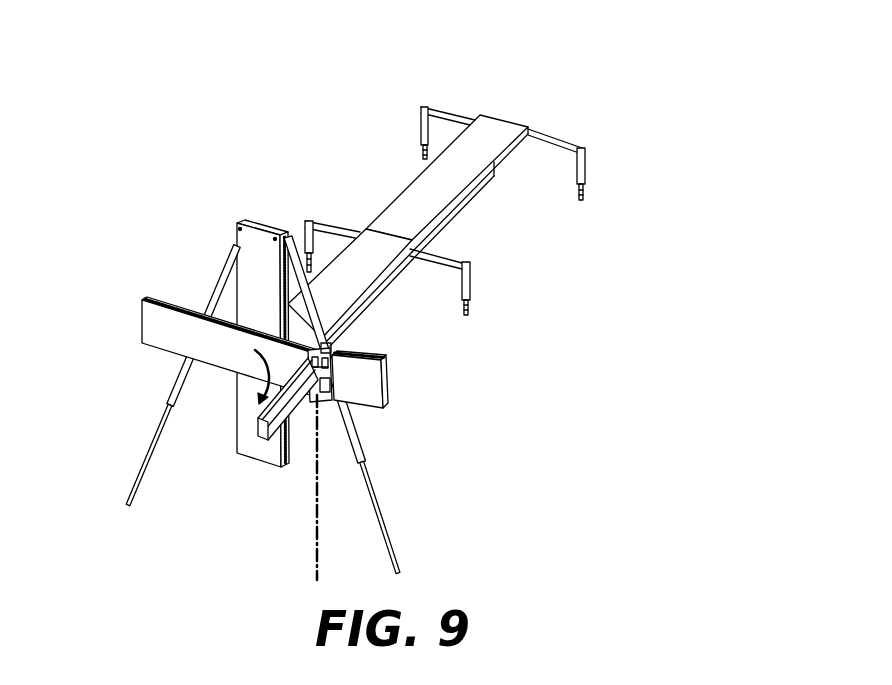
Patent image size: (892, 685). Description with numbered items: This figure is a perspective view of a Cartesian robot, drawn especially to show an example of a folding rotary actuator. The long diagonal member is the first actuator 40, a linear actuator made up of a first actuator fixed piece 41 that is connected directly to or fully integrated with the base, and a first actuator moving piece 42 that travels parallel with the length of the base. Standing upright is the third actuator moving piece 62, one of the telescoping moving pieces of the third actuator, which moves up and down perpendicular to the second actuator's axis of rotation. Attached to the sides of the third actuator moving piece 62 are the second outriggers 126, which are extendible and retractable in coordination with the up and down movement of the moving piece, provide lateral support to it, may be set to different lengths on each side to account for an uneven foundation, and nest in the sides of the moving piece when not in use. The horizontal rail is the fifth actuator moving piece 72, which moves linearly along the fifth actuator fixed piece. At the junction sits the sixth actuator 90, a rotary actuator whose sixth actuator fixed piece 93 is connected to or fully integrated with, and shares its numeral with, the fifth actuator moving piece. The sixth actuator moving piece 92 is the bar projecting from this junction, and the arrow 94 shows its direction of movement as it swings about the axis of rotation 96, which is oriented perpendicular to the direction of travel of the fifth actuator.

The first actuator 40 is at (436, 189).
The first actuator fixed piece 41 is at (497, 133).
The first actuator moving piece 42 is at (362, 253).
The third actuator moving piece 62 is at (263, 248).
The fifth actuator moving piece 72 is at (157, 324).
The sixth actuator 90 is at (342, 353).
The sixth actuator moving piece 92 is at (292, 418).
The sixth actuator fixed piece 93 is at (323, 345).
The arrow 94 is at (248, 392).
The axis of rotation 96 is at (317, 533).
The second outriggers 126 is at (154, 450).